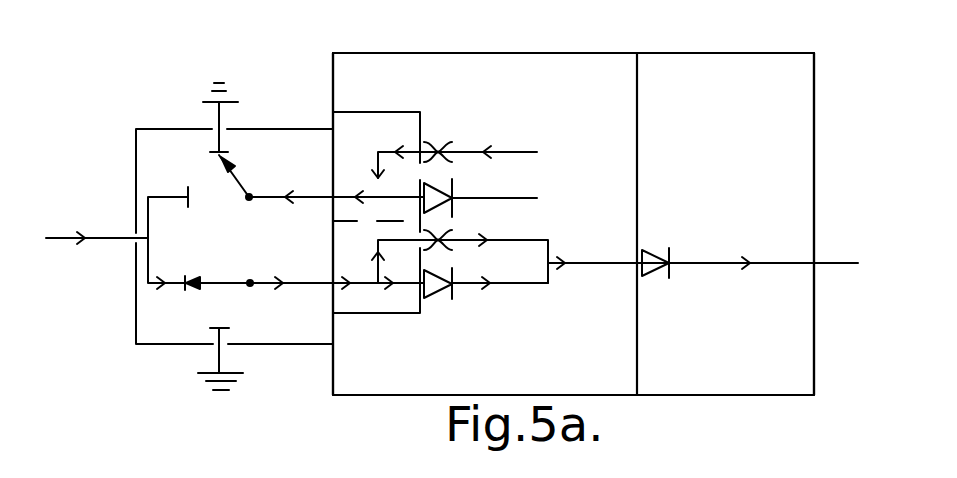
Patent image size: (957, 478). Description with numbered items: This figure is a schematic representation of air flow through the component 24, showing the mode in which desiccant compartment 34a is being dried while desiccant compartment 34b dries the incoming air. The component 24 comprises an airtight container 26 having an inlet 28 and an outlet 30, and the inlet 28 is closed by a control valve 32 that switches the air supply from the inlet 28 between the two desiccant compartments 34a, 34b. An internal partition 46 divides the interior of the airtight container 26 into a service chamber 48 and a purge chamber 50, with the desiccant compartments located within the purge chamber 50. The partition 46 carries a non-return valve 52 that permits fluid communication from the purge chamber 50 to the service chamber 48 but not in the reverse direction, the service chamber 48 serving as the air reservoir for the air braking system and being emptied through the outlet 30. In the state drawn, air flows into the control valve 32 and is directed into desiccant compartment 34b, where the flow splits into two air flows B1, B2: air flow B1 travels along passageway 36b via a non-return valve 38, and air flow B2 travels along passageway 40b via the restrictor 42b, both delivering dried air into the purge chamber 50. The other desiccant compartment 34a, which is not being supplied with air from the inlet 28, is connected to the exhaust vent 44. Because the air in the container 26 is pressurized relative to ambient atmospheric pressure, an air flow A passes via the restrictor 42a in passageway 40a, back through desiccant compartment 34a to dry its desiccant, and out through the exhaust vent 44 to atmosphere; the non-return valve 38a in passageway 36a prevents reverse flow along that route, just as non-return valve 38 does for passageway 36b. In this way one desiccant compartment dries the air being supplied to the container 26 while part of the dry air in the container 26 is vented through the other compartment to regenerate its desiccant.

The component 24 is at (566, 40).
The airtight container 26 is at (618, 48).
The inlet 28 is at (65, 240).
The outlet 30 is at (841, 264).
The control valve 32 is at (268, 346).
The desiccant compartment 34a is at (368, 110).
The desiccant compartment 34b is at (358, 318).
The passageway 36a is at (537, 198).
The passageway 36b is at (552, 278).
The non-return valve 38 is at (444, 290).
The non-return valve 38a is at (455, 183).
The passageway 40a is at (537, 152).
The passageway 40b is at (548, 240).
The restrictor 42a is at (441, 150).
The restrictor 42b is at (447, 236).
The exhaust vent 44 is at (222, 114).
The partition 46 is at (637, 148).
The service chamber 48 is at (750, 62).
The purge chamber 50 is at (430, 53).
The non-return valve 52 is at (652, 272).
The air flow A is at (284, 196).
The air flow B1 is at (488, 286).
The air flow B2 is at (486, 243).